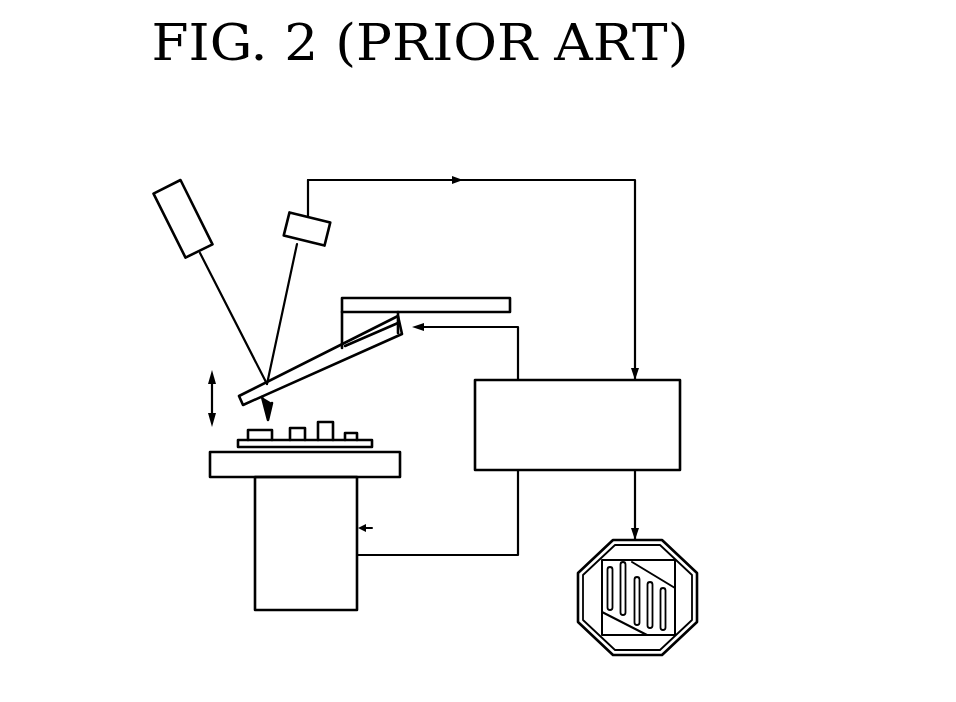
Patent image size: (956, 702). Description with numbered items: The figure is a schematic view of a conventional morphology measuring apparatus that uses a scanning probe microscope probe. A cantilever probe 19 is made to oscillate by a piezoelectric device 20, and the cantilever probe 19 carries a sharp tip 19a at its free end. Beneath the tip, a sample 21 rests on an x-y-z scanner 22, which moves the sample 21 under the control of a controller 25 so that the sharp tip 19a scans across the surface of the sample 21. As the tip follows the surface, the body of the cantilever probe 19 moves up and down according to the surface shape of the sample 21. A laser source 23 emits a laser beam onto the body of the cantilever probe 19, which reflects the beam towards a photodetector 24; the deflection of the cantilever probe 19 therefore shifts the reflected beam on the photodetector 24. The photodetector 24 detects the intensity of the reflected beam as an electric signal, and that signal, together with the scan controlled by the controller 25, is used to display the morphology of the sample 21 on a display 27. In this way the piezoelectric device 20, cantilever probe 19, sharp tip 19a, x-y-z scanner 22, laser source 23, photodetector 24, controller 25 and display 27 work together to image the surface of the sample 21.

The cantilever probe 19 is at (337, 363).
The sharp tip 19a is at (273, 406).
The piezoelectric device 20 is at (387, 298).
The sample 21 is at (238, 443).
The x-y-z scanner 22 is at (255, 552).
The laser source 23 is at (177, 183).
The photodetector 24 is at (290, 213).
The controller 25 is at (573, 380).
The display 27 is at (688, 562).